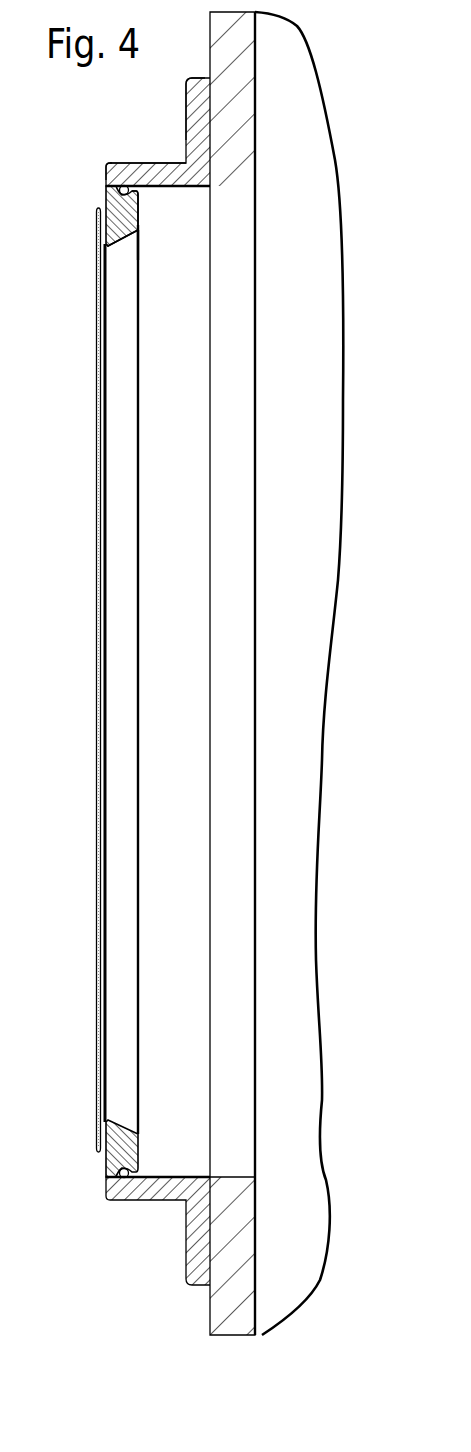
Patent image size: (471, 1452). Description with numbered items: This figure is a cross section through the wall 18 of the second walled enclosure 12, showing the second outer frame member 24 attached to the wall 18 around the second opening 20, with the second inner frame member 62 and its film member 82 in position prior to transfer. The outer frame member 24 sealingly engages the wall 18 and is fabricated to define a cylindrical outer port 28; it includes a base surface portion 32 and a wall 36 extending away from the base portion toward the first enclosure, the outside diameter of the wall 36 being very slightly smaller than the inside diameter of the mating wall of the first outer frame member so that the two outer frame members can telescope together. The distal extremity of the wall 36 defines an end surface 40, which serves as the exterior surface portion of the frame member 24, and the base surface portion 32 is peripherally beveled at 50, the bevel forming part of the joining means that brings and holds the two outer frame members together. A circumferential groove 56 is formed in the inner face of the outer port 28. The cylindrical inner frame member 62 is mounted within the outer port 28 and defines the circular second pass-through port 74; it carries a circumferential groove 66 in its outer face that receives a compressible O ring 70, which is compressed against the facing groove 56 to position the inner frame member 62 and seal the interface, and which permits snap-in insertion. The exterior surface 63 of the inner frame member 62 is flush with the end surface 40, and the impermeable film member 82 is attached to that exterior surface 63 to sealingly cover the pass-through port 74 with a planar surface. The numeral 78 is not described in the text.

The second walled enclosure 12 is at (319, 471).
The wall of enclosure 18 is at (258, 82).
The second opening 20 is at (257, 197).
The second outer frame member 24 is at (191, 77).
The outer port 28 is at (140, 197).
The base surface portion 32 is at (186, 113).
The wall 36 is at (155, 162).
The end surface 40 is at (106, 164).
The bevel 50 is at (205, 77).
The circumferential groove 56 is at (120, 162).
The second inner frame member 62 is at (140, 210).
The exterior surface 63 is at (107, 189).
The circumferential groove 66 is at (104, 228).
The O ring 70 is at (110, 198).
The second pass-through port 74 is at (140, 350).
The seal lower corner 78 is at (140, 242).
The film member 82 is at (96, 402).